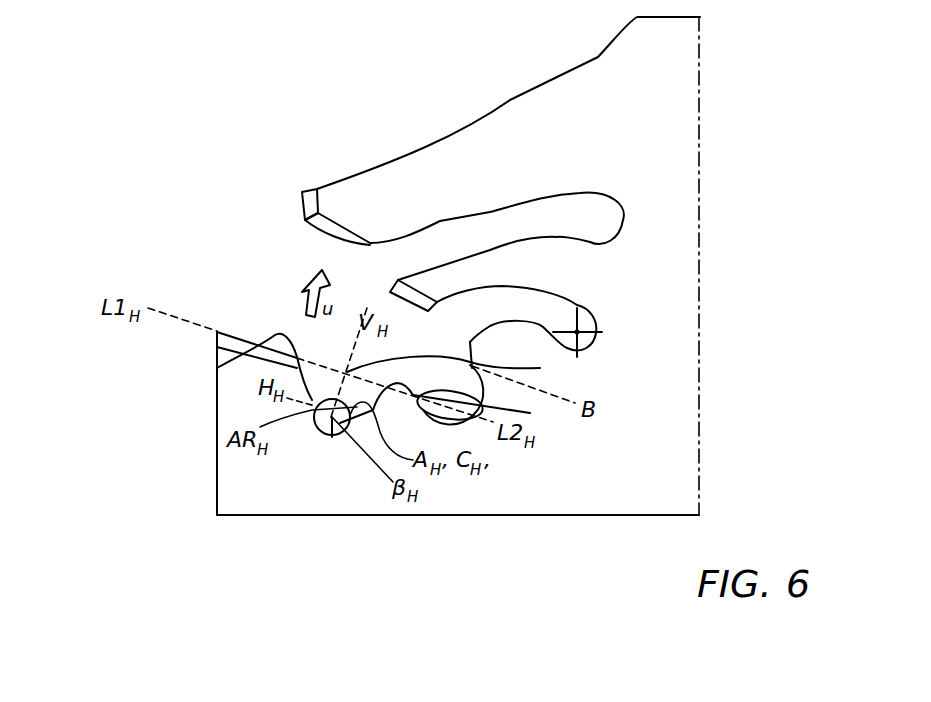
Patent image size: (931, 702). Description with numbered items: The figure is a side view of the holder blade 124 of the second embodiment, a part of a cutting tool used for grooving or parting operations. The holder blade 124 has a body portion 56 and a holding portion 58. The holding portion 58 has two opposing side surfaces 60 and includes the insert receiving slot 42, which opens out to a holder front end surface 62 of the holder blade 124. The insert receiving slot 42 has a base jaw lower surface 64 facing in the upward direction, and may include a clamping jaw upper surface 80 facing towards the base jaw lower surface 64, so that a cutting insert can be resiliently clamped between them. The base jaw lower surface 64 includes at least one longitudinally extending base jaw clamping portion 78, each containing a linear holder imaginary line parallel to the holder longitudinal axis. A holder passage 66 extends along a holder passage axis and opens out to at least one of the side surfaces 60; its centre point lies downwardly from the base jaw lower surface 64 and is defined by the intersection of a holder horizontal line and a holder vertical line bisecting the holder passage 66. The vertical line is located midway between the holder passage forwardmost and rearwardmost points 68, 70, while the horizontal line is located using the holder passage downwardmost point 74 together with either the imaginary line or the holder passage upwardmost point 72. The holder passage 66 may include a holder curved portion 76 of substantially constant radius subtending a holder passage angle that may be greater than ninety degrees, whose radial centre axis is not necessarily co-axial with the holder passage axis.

The holder blade 124 is at (162, 200).
The insert receiving slot 42 is at (266, 270).
The clamping jaw upper surface 80 is at (320, 238).
The holding portion 58 is at (665, 160).
The base jaw lower surface 64 is at (248, 330).
The base jaw clamping portion 78 is at (228, 334).
The holder passage forwardmost point 68 is at (217, 368).
The side surface 60 is at (228, 405).
The holder front end surface 62 is at (218, 443).
The holder passage downwardmost point 74 is at (323, 433).
The holder curved portion 76 is at (333, 437).
The holder passage 66 is at (348, 456).
The holder passage rearwardmost point 70 is at (380, 403).
The holder passage upwardmost point 72 is at (540, 368).
The body portion 56 is at (715, 473).